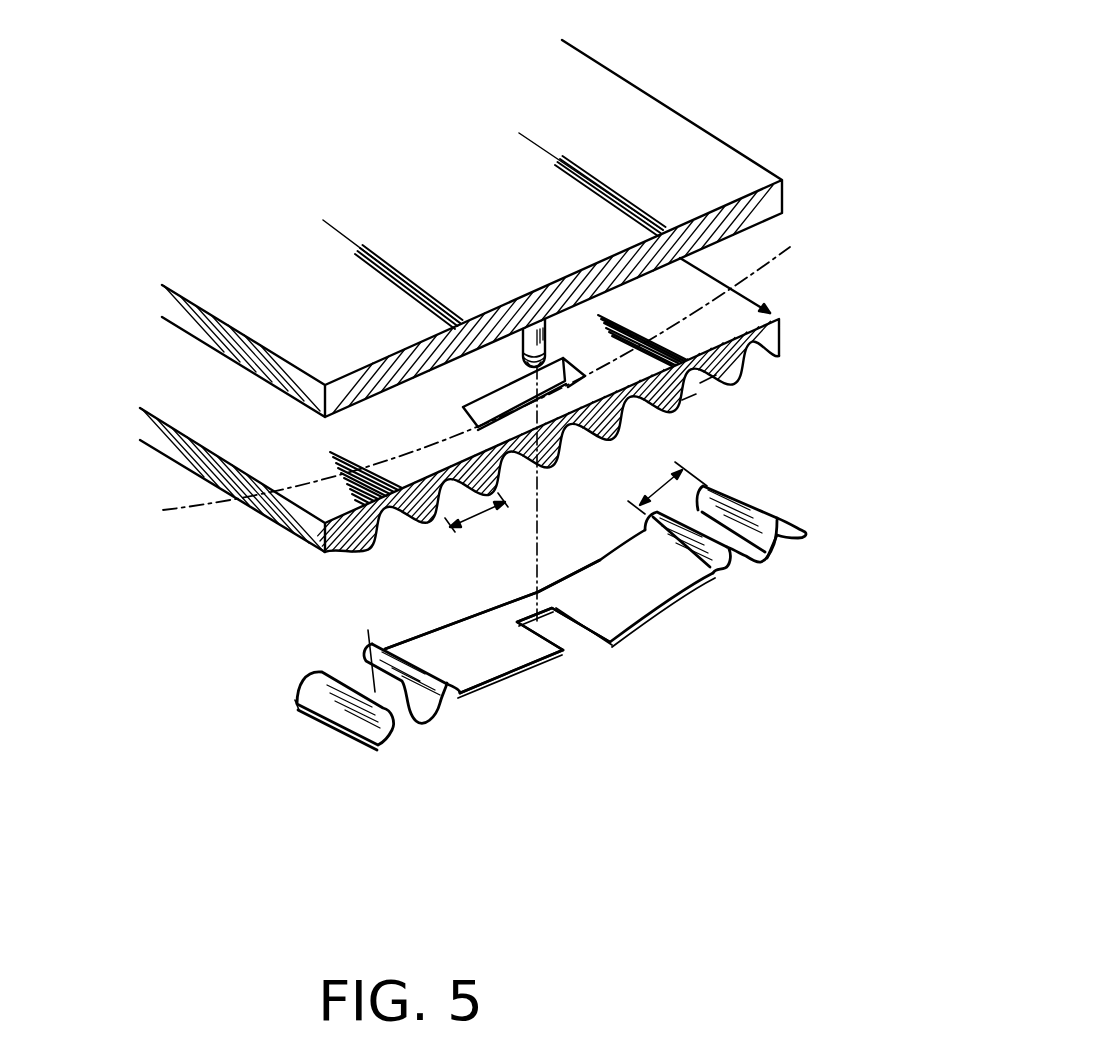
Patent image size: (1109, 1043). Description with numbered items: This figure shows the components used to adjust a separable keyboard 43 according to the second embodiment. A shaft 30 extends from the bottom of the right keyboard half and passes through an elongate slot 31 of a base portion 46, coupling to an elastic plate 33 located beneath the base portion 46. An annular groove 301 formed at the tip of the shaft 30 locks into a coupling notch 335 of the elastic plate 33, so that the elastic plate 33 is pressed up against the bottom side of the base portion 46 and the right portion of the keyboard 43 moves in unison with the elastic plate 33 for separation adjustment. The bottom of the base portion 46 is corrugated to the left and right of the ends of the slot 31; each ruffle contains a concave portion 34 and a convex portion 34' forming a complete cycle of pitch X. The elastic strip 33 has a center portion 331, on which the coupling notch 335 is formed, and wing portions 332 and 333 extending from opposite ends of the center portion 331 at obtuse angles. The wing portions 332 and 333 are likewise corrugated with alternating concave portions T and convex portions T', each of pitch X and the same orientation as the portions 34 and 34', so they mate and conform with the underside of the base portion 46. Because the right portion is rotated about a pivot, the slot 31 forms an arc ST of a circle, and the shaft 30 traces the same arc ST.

The separable keyboard 43 is at (702, 143).
The shaft 30 is at (546, 341).
The annular groove 301 is at (540, 375).
The elongate slot 31 is at (572, 366).
The base portion 46 is at (776, 318).
The concave portion 34 is at (749, 399).
The convex portion 34' is at (725, 423).
The elastic plate 33 is at (485, 702).
The center portion 331 is at (453, 629).
The wing portion 332 is at (372, 742).
The wing portion 333 is at (763, 563).
The coupling notch 335 is at (583, 627).
The arc ST is at (488, 365).
The concave portion T is at (380, 635).
The convex portion T' is at (310, 658).
The pitch X is at (576, 497).